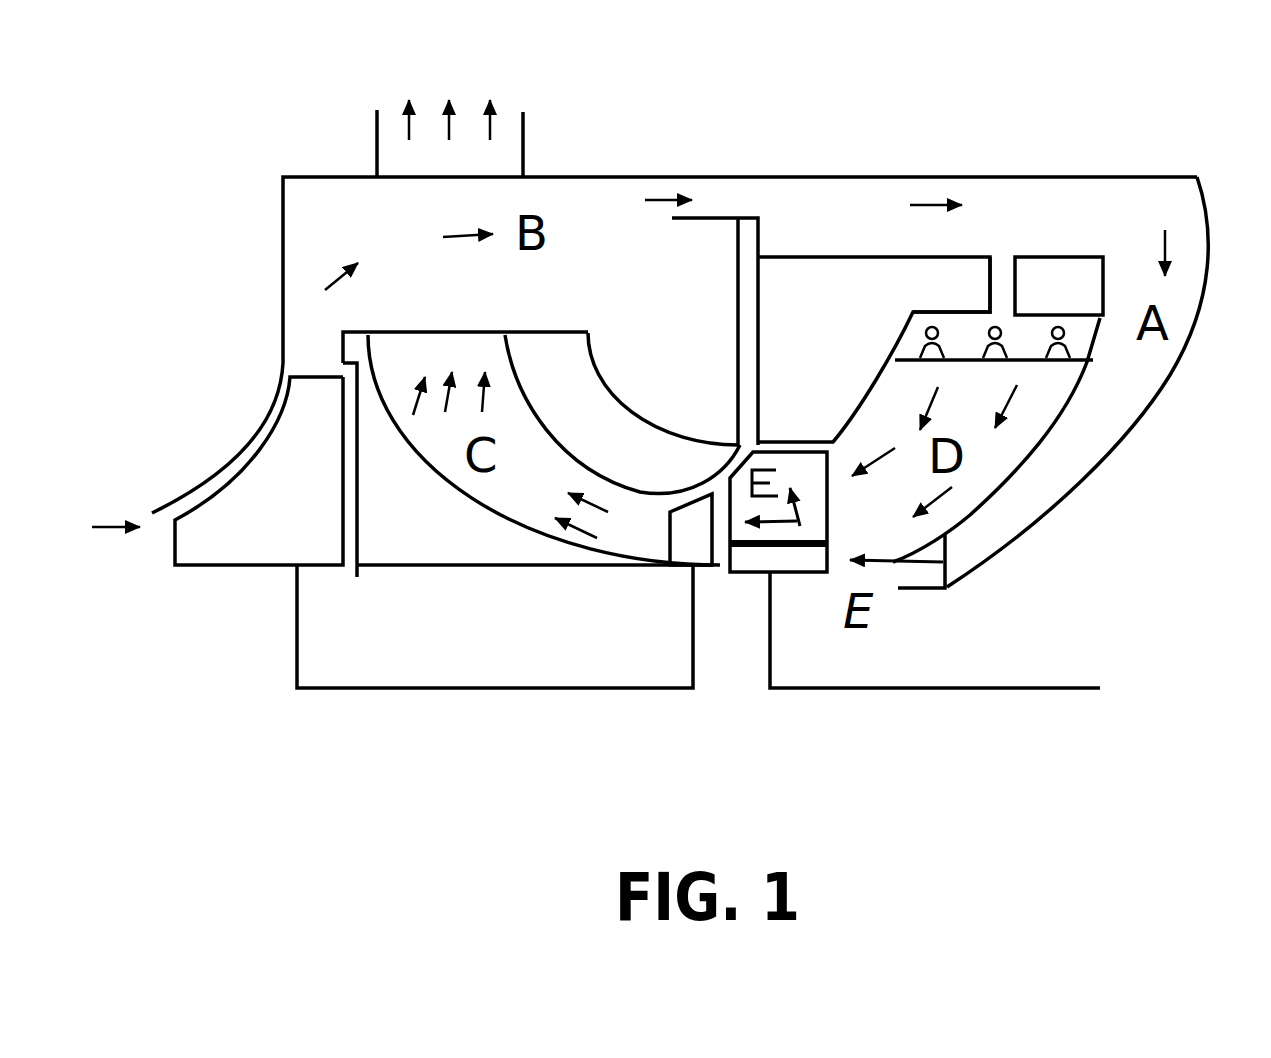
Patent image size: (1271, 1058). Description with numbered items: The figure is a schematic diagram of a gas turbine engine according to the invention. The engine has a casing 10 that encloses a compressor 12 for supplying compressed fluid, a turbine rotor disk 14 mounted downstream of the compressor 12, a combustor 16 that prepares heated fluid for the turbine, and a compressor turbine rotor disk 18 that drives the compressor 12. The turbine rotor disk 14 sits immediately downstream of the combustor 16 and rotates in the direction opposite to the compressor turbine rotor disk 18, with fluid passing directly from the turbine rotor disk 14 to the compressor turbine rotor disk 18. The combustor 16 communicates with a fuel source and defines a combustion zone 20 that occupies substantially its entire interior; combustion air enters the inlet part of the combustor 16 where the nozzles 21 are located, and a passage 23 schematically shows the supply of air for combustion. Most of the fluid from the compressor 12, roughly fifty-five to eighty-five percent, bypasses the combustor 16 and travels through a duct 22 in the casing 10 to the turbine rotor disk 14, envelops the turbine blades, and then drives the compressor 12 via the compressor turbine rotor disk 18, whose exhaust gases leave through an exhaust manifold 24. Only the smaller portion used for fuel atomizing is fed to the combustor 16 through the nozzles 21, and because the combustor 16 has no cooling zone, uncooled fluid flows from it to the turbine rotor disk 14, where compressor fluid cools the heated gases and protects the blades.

The casing 10 is at (335, 177).
The compressor 12 is at (197, 558).
The turbine rotor disk 14 is at (760, 580).
The combustor 16 is at (1057, 430).
The compressor turbine rotor disk 18 is at (698, 552).
The combustion zone 20 is at (986, 460).
The nozzles 21 is at (1058, 313).
The duct 22 is at (1007, 228).
The passage 23 is at (1000, 283).
The exhaust manifold 24 is at (532, 128).